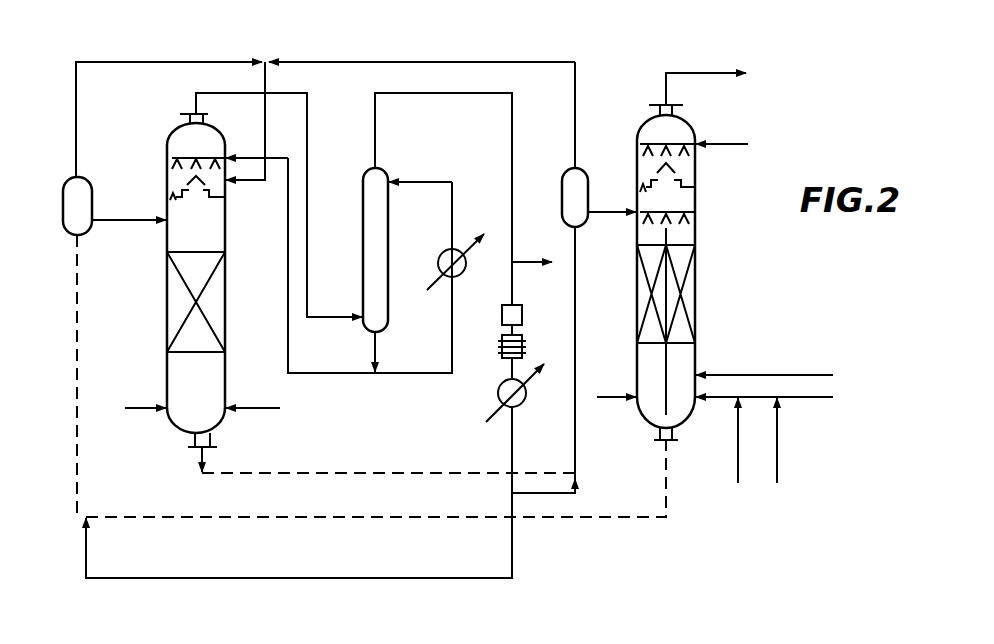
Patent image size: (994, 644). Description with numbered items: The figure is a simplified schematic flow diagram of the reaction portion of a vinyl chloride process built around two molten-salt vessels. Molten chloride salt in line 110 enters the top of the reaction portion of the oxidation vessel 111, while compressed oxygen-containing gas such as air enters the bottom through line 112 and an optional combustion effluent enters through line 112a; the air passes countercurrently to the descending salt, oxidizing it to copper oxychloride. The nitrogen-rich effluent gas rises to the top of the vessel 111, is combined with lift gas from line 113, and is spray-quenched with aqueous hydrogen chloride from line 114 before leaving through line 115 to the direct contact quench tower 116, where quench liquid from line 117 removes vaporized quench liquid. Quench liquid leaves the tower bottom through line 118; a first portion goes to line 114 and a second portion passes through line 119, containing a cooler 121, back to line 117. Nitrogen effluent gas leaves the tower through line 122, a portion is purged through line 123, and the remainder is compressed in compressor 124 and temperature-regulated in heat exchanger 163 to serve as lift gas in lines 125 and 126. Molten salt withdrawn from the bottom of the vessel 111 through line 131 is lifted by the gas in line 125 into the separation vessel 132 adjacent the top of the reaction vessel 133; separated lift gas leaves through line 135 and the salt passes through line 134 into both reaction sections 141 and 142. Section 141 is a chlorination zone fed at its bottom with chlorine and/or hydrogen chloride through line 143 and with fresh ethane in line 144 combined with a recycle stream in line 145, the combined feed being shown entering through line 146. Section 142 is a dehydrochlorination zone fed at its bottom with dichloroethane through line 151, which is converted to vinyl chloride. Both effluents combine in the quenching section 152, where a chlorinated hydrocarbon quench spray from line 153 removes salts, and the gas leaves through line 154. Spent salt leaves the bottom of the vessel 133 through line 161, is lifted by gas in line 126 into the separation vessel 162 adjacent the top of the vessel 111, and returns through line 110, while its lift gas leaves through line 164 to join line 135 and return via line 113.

The line 110 is at (143, 220).
The oxidation vessel 111 is at (166, 264).
The line 112 is at (150, 403).
The line 112a is at (258, 405).
The line 113 is at (245, 183).
The line 114 is at (288, 273).
The line 115 is at (307, 137).
The direct contact quench tower 116 is at (363, 212).
The line 117 is at (440, 182).
The line 118 is at (375, 347).
The line 119 is at (397, 373).
The cooler 121 is at (441, 256).
The line 122 is at (413, 98).
The line 123 is at (515, 262).
The compressor 124 is at (523, 315).
The line 125 is at (588, 488).
The line 126 is at (368, 580).
The line 131 is at (383, 472).
The separation vessel 132 is at (562, 195).
The reaction vessel 133 is at (698, 263).
The line 134 is at (606, 210).
The line 135 is at (447, 62).
The reaction section 141 is at (692, 348).
The reaction section 142 is at (645, 362).
The line 143 is at (780, 375).
The line 144 is at (738, 467).
The line 145 is at (777, 467).
The inlet line 146 is at (817, 400).
The line 151 is at (599, 402).
The quenching section 152 is at (683, 175).
The line 153 is at (725, 144).
The line 154 is at (700, 73).
The line 161 is at (570, 518).
The separation vessel 162 is at (63, 207).
The heat exchanger 163 is at (498, 390).
The line 164 is at (76, 142).